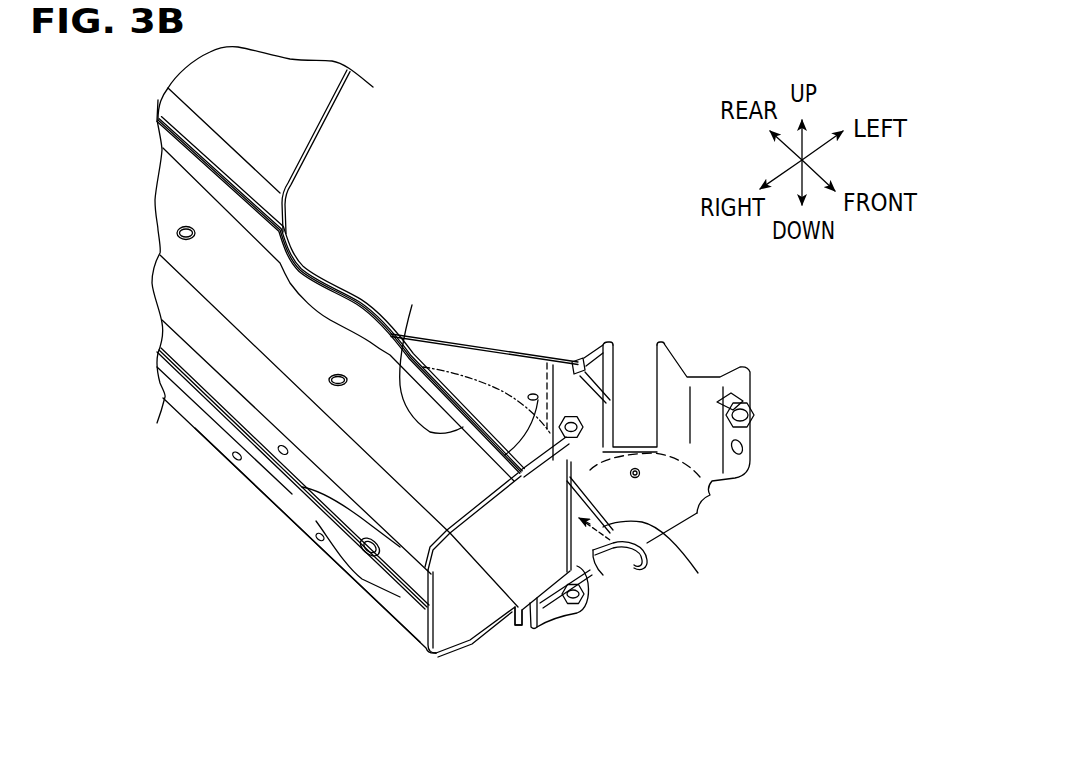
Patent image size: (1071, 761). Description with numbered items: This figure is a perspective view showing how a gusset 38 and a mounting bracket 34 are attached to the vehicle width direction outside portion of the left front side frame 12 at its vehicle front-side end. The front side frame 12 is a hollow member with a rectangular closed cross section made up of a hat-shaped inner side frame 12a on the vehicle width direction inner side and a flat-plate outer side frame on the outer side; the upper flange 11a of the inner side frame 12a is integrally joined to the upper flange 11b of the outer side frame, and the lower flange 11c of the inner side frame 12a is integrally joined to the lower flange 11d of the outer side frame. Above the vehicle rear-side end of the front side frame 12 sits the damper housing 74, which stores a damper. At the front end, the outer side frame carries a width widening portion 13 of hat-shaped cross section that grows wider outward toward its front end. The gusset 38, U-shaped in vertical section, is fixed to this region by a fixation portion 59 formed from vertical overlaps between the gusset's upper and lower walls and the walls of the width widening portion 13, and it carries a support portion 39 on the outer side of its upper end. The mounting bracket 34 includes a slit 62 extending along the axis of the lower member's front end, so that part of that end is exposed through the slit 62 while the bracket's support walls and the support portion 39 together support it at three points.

The front side frame 12 is at (212, 574).
The inner side frame 12a is at (250, 499).
The damper housing 74 is at (303, 110).
The upper flange 11a is at (466, 364).
The gusset 38 is at (487, 337).
The fixation portion 59 is at (498, 409).
The upper flange 11b is at (548, 358).
The support portion 39 is at (611, 348).
The mounting bracket 34 is at (695, 360).
The slit 62 is at (656, 388).
The width widening portion 13 is at (693, 568).
The lower flange 11c is at (515, 618).
The lower flange 11d is at (534, 620).